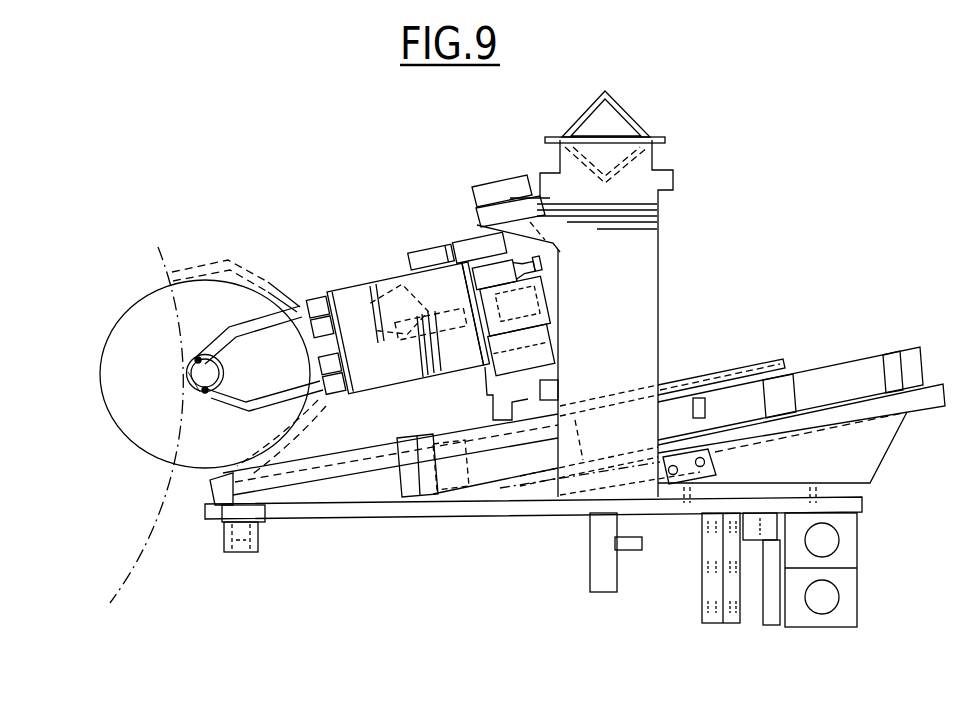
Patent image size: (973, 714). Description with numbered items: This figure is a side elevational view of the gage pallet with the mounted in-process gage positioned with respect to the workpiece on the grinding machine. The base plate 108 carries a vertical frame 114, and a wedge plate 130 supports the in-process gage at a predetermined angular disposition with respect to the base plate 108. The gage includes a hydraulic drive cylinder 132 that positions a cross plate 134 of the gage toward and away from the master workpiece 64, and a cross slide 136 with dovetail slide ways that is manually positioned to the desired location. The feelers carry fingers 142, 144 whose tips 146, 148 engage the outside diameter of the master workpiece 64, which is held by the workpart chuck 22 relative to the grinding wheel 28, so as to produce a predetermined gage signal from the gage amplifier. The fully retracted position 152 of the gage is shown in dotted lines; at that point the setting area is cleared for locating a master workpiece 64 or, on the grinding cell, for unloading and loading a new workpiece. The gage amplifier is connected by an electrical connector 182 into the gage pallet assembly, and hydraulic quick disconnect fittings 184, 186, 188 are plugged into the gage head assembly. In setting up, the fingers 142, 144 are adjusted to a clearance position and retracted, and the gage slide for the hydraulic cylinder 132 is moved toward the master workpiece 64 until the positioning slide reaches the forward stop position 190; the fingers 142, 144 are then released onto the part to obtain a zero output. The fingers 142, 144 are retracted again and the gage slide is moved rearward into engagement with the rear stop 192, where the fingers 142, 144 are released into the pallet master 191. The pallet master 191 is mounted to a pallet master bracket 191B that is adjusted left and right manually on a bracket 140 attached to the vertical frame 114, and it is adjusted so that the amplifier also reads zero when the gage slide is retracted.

The workpart chuck 22 is at (137, 303).
The grinding wheel 28 is at (160, 250).
The master workpiece 64 is at (188, 380).
The base plate 108 is at (525, 510).
The vertical frame 114 is at (662, 235).
The wedge plate 130 is at (890, 443).
The hydraulic drive cylinder 132 is at (852, 382).
The cross plate 134 is at (480, 397).
The cross slide 136 is at (558, 344).
The bracket 140 is at (493, 184).
The finger 142 is at (263, 313).
The finger 144 is at (237, 400).
The tip 146 is at (190, 361).
The tip 148 is at (187, 388).
The fully retracted position 152 is at (333, 282).
The electrical connector 182 is at (836, 537).
The hydraulic quick disconnect fitting 184 is at (699, 538).
The hydraulic quick disconnect fitting 186 is at (699, 577).
The hydraulic quick disconnect fitting 188 is at (700, 613).
The forward stop position 190 is at (410, 496).
The pallet master 191 is at (378, 297).
The pallet master bracket 191B is at (437, 308).
The rear stop 192 is at (705, 400).